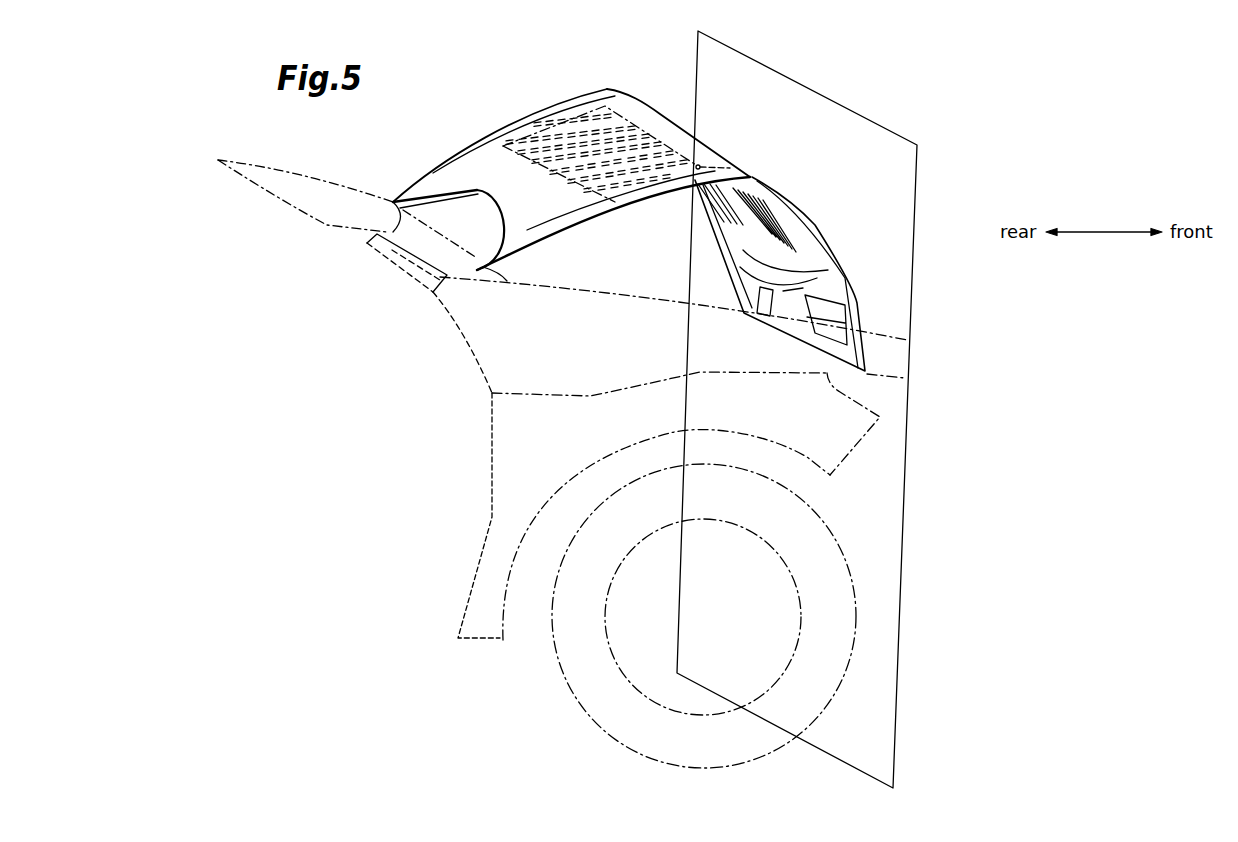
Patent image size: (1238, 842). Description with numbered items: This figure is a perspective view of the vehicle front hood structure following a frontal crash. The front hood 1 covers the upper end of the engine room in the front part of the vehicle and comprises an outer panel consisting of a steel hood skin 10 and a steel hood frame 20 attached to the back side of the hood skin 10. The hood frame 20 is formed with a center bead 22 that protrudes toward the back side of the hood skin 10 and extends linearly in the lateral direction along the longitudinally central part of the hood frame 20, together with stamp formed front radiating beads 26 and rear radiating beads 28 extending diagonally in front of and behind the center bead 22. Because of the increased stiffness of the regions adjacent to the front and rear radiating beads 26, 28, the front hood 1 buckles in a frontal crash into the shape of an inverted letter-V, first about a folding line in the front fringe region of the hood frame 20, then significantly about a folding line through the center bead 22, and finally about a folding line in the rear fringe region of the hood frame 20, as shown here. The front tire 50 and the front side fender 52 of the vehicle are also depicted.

The front hood 1 is at (488, 153).
The hood skin 10 is at (620, 94).
The hood frame 20 is at (556, 112).
The center bead 22 is at (657, 114).
The front radiating beads 26 is at (770, 230).
The rear radiating beads 28 is at (598, 172).
The front tire 50 is at (585, 713).
The front side fender 52 is at (491, 454).